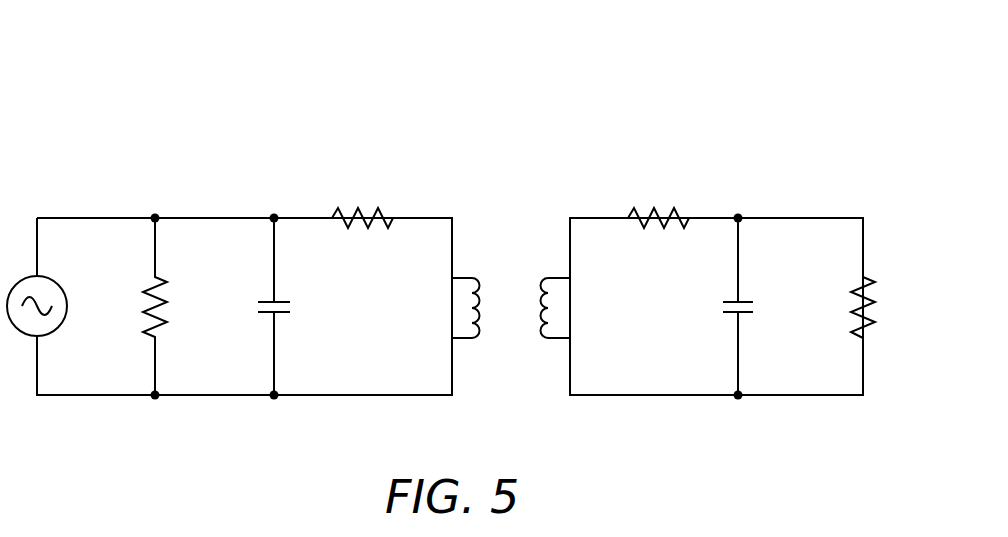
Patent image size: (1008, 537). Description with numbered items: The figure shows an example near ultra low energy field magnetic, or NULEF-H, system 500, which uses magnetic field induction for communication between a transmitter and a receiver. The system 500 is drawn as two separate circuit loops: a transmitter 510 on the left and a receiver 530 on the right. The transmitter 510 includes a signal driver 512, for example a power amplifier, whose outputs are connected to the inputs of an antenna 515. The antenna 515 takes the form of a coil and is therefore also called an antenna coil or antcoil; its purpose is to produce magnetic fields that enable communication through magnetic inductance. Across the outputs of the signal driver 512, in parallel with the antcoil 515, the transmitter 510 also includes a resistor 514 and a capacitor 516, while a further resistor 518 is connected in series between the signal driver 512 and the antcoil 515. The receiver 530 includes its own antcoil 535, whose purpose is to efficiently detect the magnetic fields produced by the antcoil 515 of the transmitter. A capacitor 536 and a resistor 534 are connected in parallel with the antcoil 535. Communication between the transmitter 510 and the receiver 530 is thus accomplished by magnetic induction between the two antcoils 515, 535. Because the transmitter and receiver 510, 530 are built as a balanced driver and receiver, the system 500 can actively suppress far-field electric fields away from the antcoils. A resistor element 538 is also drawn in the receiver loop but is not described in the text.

The NULEF-H system 500 is at (124, 54).
The transmitter 510 is at (132, 156).
The signal driver 512 is at (50, 283).
The resistor 514 is at (163, 299).
The antenna 515 is at (470, 317).
The capacitor 516 is at (283, 300).
The resistor 518 is at (353, 213).
The receiver 530 is at (587, 153).
The resistor 534 is at (858, 318).
The antcoil 535 is at (550, 313).
The capacitor 536 is at (746, 300).
The resistor 538 is at (661, 212).